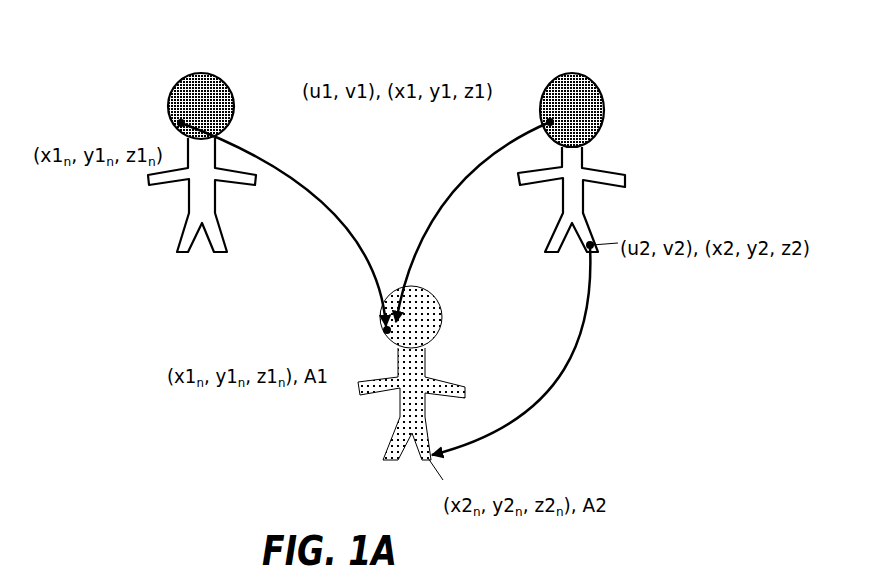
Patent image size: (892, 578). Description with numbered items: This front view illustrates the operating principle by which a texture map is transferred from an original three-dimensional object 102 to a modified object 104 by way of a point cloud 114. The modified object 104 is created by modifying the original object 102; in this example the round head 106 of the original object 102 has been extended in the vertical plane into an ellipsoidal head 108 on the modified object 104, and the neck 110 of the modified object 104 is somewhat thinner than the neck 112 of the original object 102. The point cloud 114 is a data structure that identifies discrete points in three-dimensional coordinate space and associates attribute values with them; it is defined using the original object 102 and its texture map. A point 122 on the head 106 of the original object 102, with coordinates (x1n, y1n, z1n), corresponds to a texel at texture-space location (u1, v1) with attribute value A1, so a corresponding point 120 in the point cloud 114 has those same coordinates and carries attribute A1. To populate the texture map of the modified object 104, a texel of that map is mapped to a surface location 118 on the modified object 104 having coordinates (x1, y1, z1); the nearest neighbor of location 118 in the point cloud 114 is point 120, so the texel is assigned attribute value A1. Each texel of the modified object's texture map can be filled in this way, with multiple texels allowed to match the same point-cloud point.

The original 3-D object 102 is at (193, 161).
The modified object 104 is at (587, 159).
The round head 106 is at (172, 93).
The ellipsoidal head 108 is at (602, 92).
The neck of modified object 110 is at (584, 153).
The neck of original object 112 is at (217, 157).
The point cloud 114 is at (381, 386).
The surface location on modified object 118 is at (548, 121).
The point in point cloud 120 is at (385, 331).
The point on original object 122 is at (180, 124).